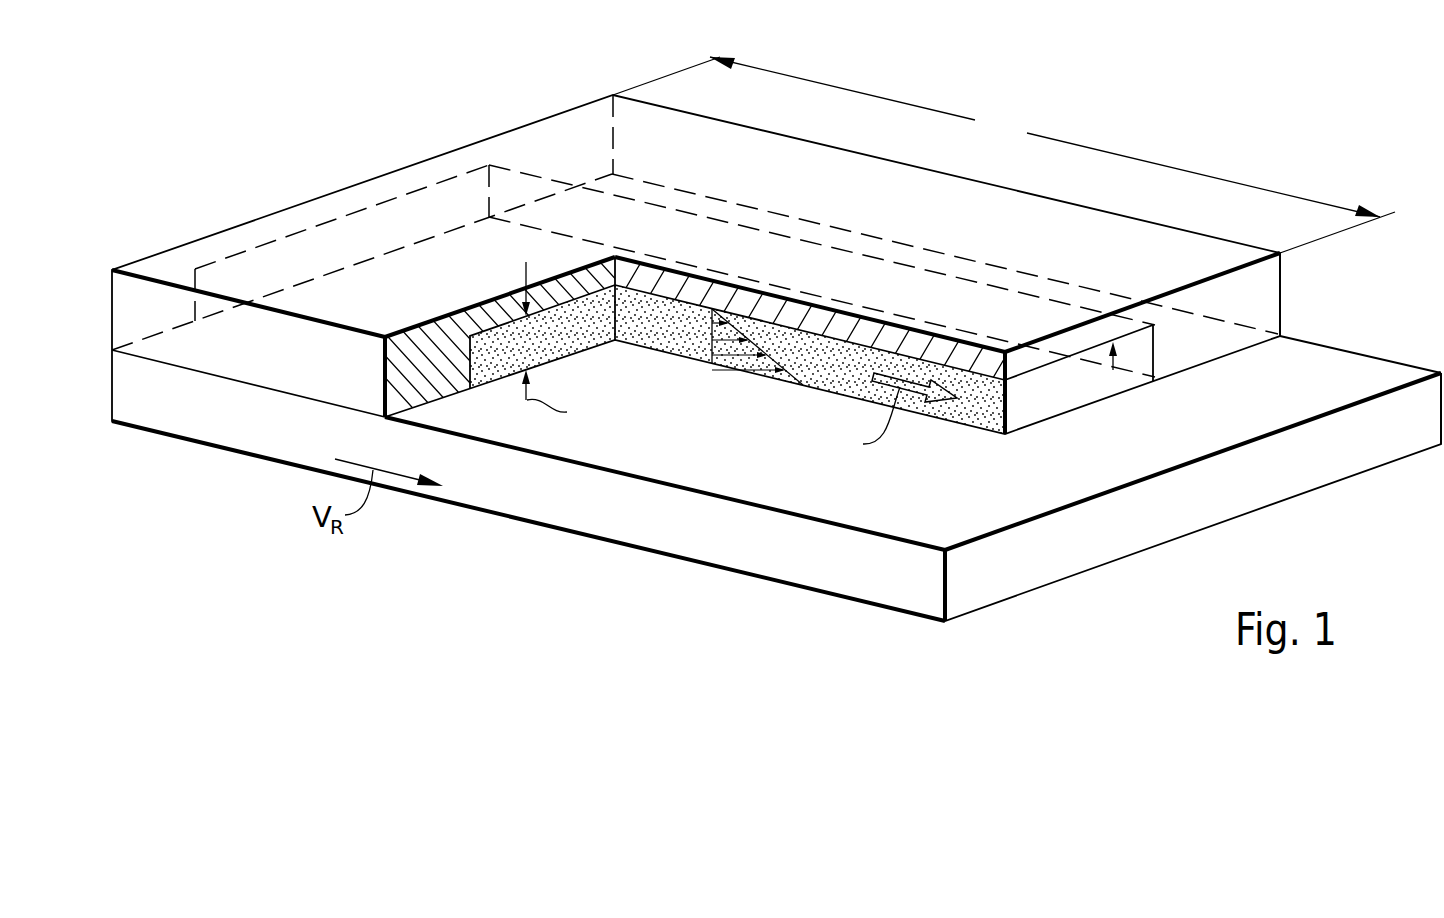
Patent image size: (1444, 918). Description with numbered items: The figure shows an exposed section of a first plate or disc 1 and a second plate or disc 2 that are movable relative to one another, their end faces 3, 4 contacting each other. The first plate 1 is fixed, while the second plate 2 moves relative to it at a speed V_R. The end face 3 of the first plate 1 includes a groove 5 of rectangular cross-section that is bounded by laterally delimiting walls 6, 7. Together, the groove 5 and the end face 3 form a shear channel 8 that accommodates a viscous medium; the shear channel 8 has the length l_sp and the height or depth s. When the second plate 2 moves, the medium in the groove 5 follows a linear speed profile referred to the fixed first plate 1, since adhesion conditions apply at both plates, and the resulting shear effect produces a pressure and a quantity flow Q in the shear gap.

The first plate 1 is at (156, 306).
The second plate 2 is at (153, 402).
The end face of the first plate 3 is at (1253, 344).
The end face of the second plate 4 is at (1353, 377).
The groove 5 is at (1113, 370).
The laterally delimiting wall 6 is at (470, 363).
The laterally delimiting wall 7 is at (1150, 353).
The shear channel 8 is at (1019, 403).